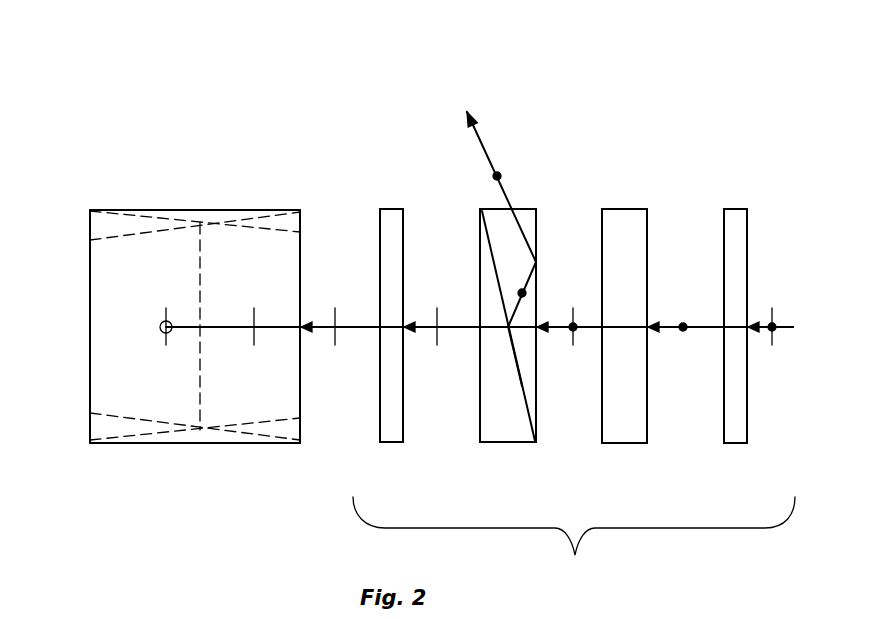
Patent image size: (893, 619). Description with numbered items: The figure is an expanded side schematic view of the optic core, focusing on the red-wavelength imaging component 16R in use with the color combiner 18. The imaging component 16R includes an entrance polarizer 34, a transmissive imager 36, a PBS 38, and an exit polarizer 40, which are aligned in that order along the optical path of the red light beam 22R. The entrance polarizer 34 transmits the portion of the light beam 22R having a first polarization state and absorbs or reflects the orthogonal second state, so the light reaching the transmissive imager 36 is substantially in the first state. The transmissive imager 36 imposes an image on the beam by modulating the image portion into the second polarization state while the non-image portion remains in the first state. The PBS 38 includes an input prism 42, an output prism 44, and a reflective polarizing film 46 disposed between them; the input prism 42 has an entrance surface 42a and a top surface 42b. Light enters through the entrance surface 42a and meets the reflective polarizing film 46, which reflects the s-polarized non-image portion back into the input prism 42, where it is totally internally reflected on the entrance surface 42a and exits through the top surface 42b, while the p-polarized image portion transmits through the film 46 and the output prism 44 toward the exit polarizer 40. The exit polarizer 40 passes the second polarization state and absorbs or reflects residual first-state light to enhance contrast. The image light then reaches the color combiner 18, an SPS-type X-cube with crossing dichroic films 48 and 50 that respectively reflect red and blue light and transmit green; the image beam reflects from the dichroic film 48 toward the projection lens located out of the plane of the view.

The imaging component 16R is at (574, 541).
The color combiner 18 is at (167, 357).
The light beam 22R is at (780, 322).
The entrance polarizer 34 is at (735, 443).
The transmissive imager 36 is at (624, 443).
The PBS 38 is at (503, 342).
The exit polarizer 40 is at (390, 443).
The input prism 42 is at (548, 407).
The entrance surface 42a is at (538, 353).
The top surface 42b is at (494, 209).
The output prism 44 is at (503, 317).
The reflective polarizing film 46 is at (512, 362).
The dichroic film 48 is at (105, 301).
The dichroic film 50 is at (246, 252).